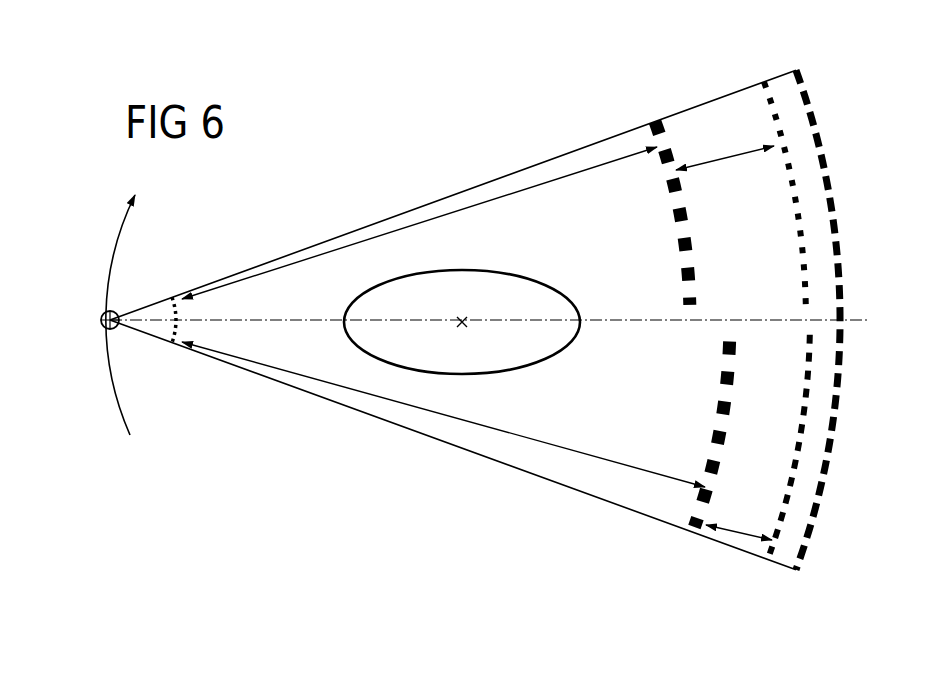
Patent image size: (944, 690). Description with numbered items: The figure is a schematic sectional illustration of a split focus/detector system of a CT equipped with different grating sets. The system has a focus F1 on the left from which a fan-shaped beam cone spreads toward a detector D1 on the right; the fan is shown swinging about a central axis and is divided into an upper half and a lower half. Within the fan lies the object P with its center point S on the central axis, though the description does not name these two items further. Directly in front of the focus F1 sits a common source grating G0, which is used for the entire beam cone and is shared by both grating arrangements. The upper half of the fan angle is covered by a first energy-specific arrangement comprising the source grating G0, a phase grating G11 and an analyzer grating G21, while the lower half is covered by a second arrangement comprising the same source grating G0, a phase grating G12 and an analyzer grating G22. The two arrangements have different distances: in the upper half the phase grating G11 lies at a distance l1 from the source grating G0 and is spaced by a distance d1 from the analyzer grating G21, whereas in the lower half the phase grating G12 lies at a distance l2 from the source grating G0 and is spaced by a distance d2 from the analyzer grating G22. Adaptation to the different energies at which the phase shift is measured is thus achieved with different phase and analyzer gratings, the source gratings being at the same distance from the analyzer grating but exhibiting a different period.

The focus F1 is at (101, 318).
The source grating G0 is at (174, 296).
The phase grating G11 is at (658, 118).
The phase grating G12 is at (694, 502).
The analyzer grating G21 is at (766, 78).
The analyzer grating G22 is at (773, 552).
The detector D1 is at (800, 80).
The patient / object cross-section P is at (542, 280).
The center point of object S is at (465, 325).
The distance l1 is at (599, 168).
The distance l2 is at (612, 460).
The distance d1 is at (735, 158).
The distance d2 is at (740, 530).